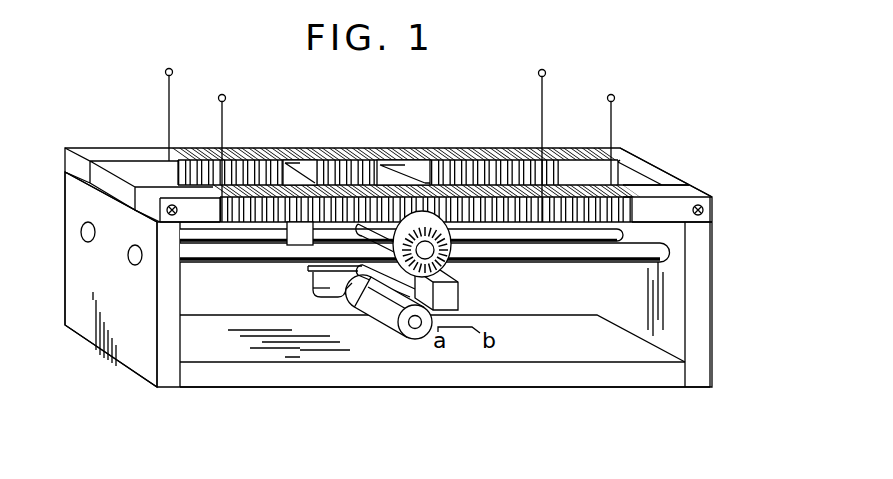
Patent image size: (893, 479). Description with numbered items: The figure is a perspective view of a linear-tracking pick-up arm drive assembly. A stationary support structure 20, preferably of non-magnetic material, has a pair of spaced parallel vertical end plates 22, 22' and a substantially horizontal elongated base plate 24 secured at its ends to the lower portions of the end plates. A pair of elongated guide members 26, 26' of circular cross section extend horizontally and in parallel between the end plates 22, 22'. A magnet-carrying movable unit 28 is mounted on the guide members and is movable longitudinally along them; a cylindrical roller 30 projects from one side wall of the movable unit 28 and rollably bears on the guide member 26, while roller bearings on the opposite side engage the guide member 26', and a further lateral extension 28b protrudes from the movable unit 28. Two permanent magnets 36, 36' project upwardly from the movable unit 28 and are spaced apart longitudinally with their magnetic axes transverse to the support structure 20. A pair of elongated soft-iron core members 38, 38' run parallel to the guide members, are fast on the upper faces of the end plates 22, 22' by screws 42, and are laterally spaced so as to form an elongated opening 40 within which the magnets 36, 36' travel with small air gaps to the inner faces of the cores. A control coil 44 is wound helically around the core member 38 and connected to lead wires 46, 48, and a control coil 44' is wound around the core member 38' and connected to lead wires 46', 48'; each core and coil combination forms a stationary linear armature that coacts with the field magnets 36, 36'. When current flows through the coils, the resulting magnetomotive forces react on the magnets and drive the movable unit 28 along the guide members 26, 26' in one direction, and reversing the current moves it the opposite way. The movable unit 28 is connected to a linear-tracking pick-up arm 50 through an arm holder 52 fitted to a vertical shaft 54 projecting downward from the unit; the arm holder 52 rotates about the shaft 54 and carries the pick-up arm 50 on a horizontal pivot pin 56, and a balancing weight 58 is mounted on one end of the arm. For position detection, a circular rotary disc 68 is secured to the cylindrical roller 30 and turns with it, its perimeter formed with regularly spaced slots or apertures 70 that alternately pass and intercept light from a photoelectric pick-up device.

The stationary support structure 20 is at (126, 370).
The end plate 22 is at (196, 320).
The end plate 22' is at (719, 307).
The base plate 24 is at (467, 387).
The guide member 26 is at (425, 275).
The guide member 26' is at (401, 260).
The magnet-carrying movable unit 28 is at (392, 317).
The lateral extension 28b is at (458, 292).
The cylindrical roller 30 is at (362, 197).
The permanent magnet 36 is at (311, 147).
The permanent magnet 36' is at (410, 144).
The magnetic core member 38 is at (673, 180).
The magnetic core member 38' is at (142, 164).
The opening 40 is at (634, 185).
The screw 42 is at (170, 205).
The control coil 44 is at (426, 165).
The control coil 44' is at (433, 133).
The lead wire 46 is at (635, 134).
The lead wire 46' is at (192, 115).
The lead wire 48 is at (245, 159).
The lead wire 48' is at (566, 144).
The linear-tracking pick-up arm 50 is at (363, 297).
The arm holder 52 is at (331, 299).
The vertical shaft 54 is at (317, 270).
The horizontal pivot pin 56 is at (313, 288).
The balancing weight 58 is at (398, 339).
The rotary disc 68 is at (456, 256).
The slots or apertures 70 is at (453, 267).